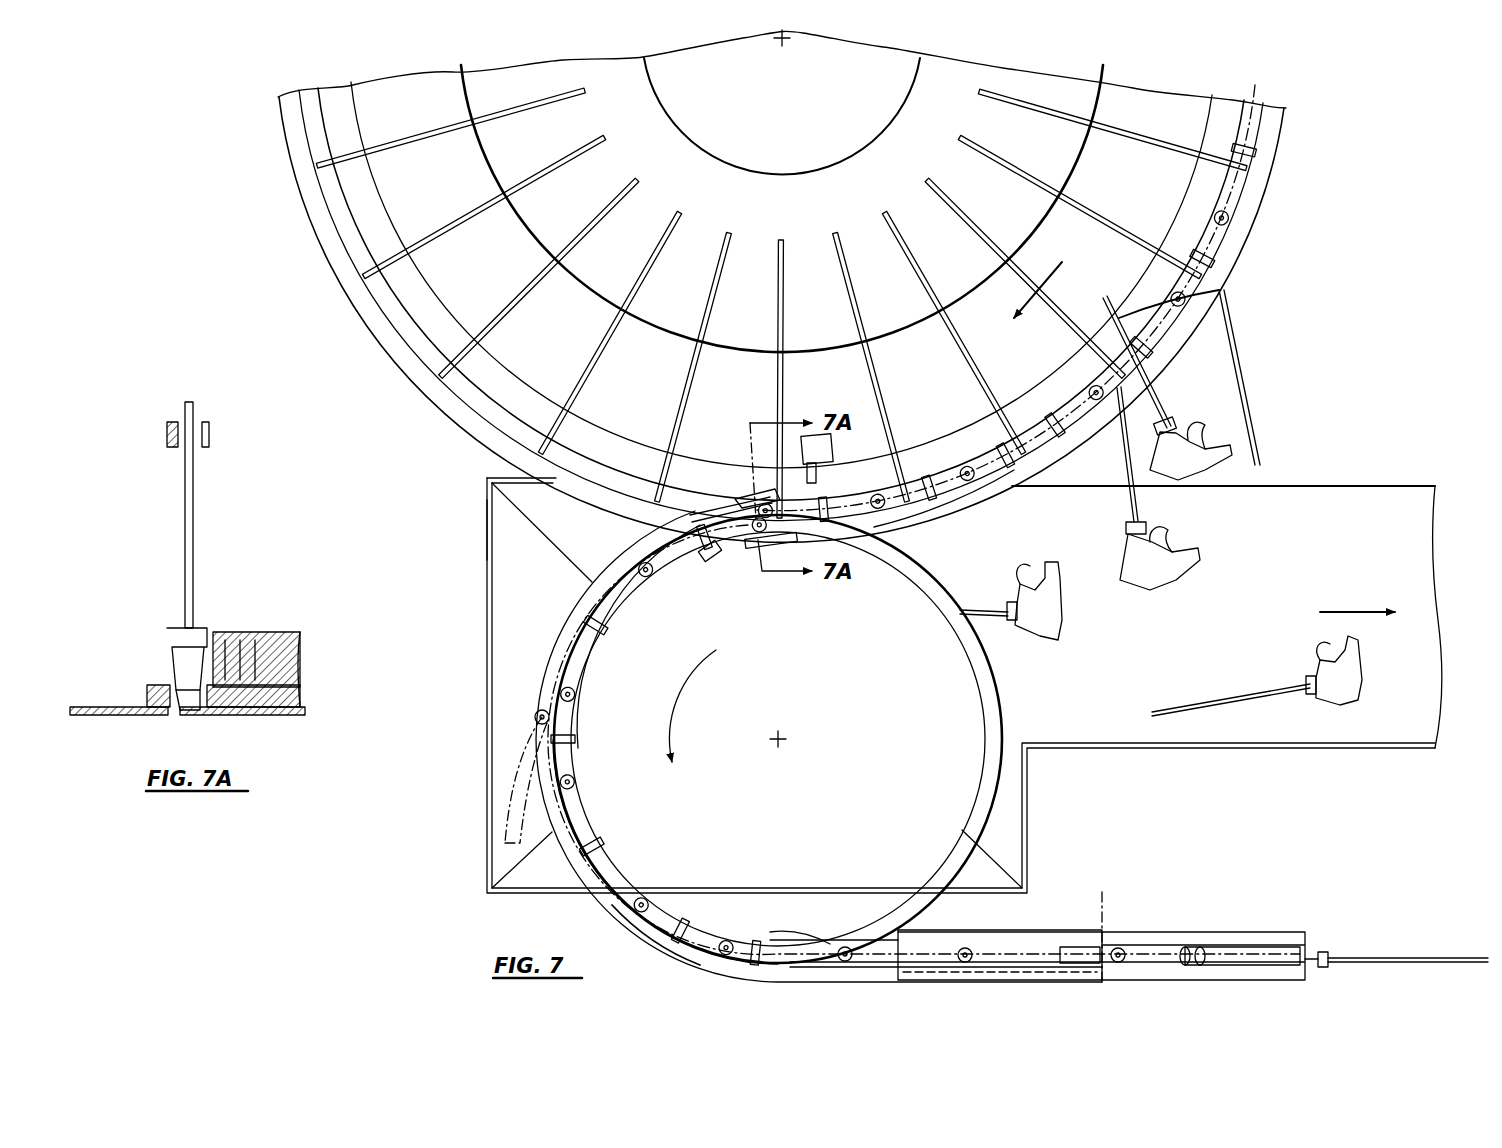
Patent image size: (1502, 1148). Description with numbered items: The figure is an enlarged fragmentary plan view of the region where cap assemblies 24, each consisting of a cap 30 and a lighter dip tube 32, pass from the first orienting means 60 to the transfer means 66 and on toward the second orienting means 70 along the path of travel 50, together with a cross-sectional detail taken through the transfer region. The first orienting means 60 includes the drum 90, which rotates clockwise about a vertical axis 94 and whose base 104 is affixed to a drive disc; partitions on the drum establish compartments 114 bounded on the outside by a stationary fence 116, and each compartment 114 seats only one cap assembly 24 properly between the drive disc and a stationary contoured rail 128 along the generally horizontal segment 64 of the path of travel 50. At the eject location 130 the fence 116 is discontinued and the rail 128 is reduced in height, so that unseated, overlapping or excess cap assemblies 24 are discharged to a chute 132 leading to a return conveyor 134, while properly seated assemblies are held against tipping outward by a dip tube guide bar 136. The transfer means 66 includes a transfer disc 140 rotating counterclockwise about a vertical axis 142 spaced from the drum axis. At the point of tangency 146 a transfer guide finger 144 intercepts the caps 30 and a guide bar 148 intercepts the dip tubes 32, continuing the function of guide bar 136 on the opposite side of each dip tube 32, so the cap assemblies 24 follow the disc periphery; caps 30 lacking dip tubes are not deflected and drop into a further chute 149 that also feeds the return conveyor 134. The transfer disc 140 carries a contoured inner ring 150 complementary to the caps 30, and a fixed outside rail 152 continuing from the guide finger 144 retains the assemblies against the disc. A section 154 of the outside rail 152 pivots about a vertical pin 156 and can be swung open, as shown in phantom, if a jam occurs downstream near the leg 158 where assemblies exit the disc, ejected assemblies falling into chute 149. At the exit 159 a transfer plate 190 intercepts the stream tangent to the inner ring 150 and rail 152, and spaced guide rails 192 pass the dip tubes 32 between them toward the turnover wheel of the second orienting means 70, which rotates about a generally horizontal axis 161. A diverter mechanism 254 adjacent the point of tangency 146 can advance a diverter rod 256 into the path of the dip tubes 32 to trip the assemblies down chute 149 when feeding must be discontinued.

In FIG. 7, the cap assembly 24 is at (1161, 461).
In FIG. 7A, the cap assembly 24 is at (211, 660).
In FIG. 7A, the cap 30 is at (190, 708).
In FIG. 7, the dip tube 32 is at (1137, 409).
In FIG. 7A, the dip tube 32 is at (195, 515).
In FIG. 7, the path of travel 50 is at (1006, 303).
In FIG. 7, the first orienting means 60 is at (791, 286).
In FIG. 7, the generally horizontal segment 64 is at (1052, 395).
In FIG. 7, the transfer means 66 is at (1002, 672).
In FIG. 7, the second orienting means 70 is at (1129, 932).
In FIG. 7, the drum 90 is at (452, 268).
In FIG. 7, the vertical axis 94 is at (782, 40).
In FIG. 7A, the base 104 is at (118, 715).
In FIG. 7, the compartment 114 is at (928, 389).
In FIG. 7, the stationary fence 116 is at (1288, 160).
In FIG. 7, the stationary contoured rail 128 is at (1150, 352).
In FIG. 7, the eject location 130 is at (1242, 348).
In FIG. 7, the chute 132 is at (1257, 395).
In FIG. 7, the return conveyor 134 is at (1380, 486).
In FIG. 7, the dip tube guide bar 136 is at (958, 512).
In FIG. 7A, the dip tube guide bar 136 is at (210, 432).
In FIG. 7, the transfer disc 140 is at (932, 672).
In FIG. 7A, the transfer disc 140 is at (300, 697).
In FIG. 7, the vertical axis 142 is at (790, 735).
In FIG. 7, the transfer guide finger 144 is at (742, 500).
In FIG. 7A, the transfer guide finger 144 is at (147, 688).
In FIG. 7, the point of tangency 146 is at (752, 546).
In FIG. 7, the guide bar 148 is at (640, 522).
In FIG. 7A, the guide bar 148 is at (166, 432).
In FIG. 7, the chute 149 is at (487, 520).
In FIG. 7, the contoured inner ring 150 is at (712, 556).
In FIG. 7A, the contoured inner ring 150 is at (235, 675).
In FIG. 7, the fixed outside rail 152 is at (550, 656).
In FIG. 7, the section 154 is at (545, 770).
In FIG. 7, the vertical pin 156 is at (535, 717).
In FIG. 7, the leg 158 is at (622, 912).
In FIG. 7, the exit 159 is at (855, 945).
In FIG. 7, the generally horizontal axis 161 is at (1104, 905).
In FIG. 7, the transfer plate 190 is at (920, 940).
In FIG. 7, the guide rails 192 is at (1075, 950).
In FIG. 7, the diverter mechanism 254 is at (825, 440).
In FIG. 7, the diverter rod 256 is at (817, 472).